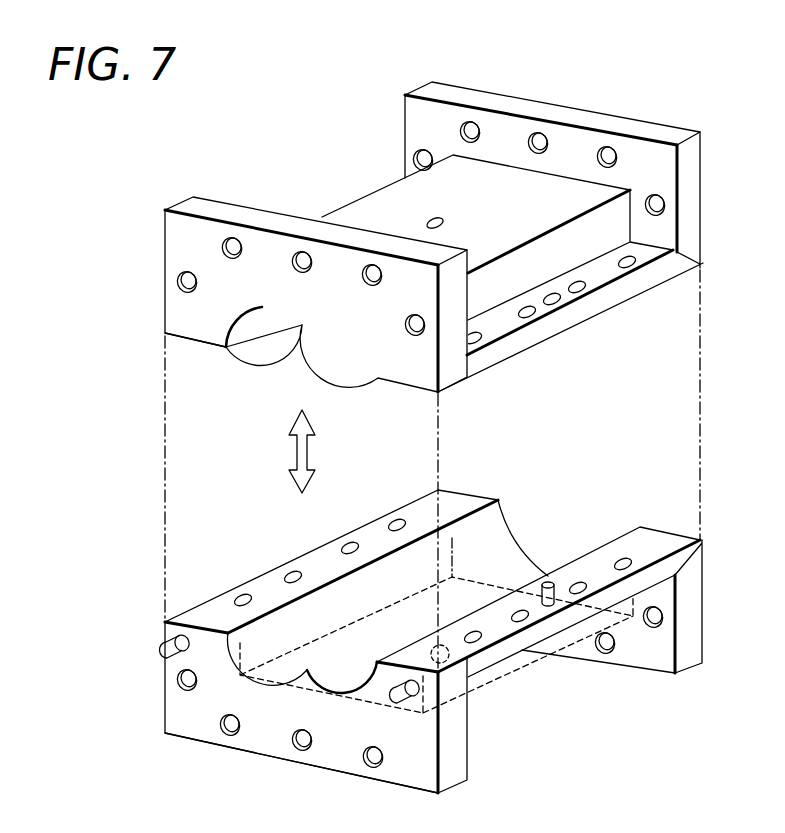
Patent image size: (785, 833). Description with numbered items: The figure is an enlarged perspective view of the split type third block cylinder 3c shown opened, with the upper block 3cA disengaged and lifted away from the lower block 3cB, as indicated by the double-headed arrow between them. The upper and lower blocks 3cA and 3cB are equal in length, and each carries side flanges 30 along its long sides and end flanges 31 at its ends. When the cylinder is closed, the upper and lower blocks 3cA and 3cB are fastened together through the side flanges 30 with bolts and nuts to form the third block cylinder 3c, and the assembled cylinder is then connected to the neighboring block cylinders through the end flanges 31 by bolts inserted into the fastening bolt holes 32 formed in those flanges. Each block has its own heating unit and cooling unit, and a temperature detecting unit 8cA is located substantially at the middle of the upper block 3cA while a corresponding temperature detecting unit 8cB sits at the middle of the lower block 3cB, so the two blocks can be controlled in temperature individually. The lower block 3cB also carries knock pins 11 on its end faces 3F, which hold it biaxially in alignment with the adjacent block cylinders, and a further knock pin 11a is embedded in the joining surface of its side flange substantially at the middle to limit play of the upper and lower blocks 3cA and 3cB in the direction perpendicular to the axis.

The third block cylinder 3c is at (321, 134).
The end flange 31 is at (253, 210).
The fastening bolt hole 32 is at (302, 252).
The end face 3F is at (178, 242).
The side flange 30 is at (582, 310).
The upper block 3cA is at (570, 250).
The lower block 3cB is at (528, 652).
The temperature detecting unit 8cA is at (425, 212).
The temperature detecting unit 8cB is at (470, 657).
The knock pin 11 is at (172, 636).
The knock pin 11a is at (548, 582).